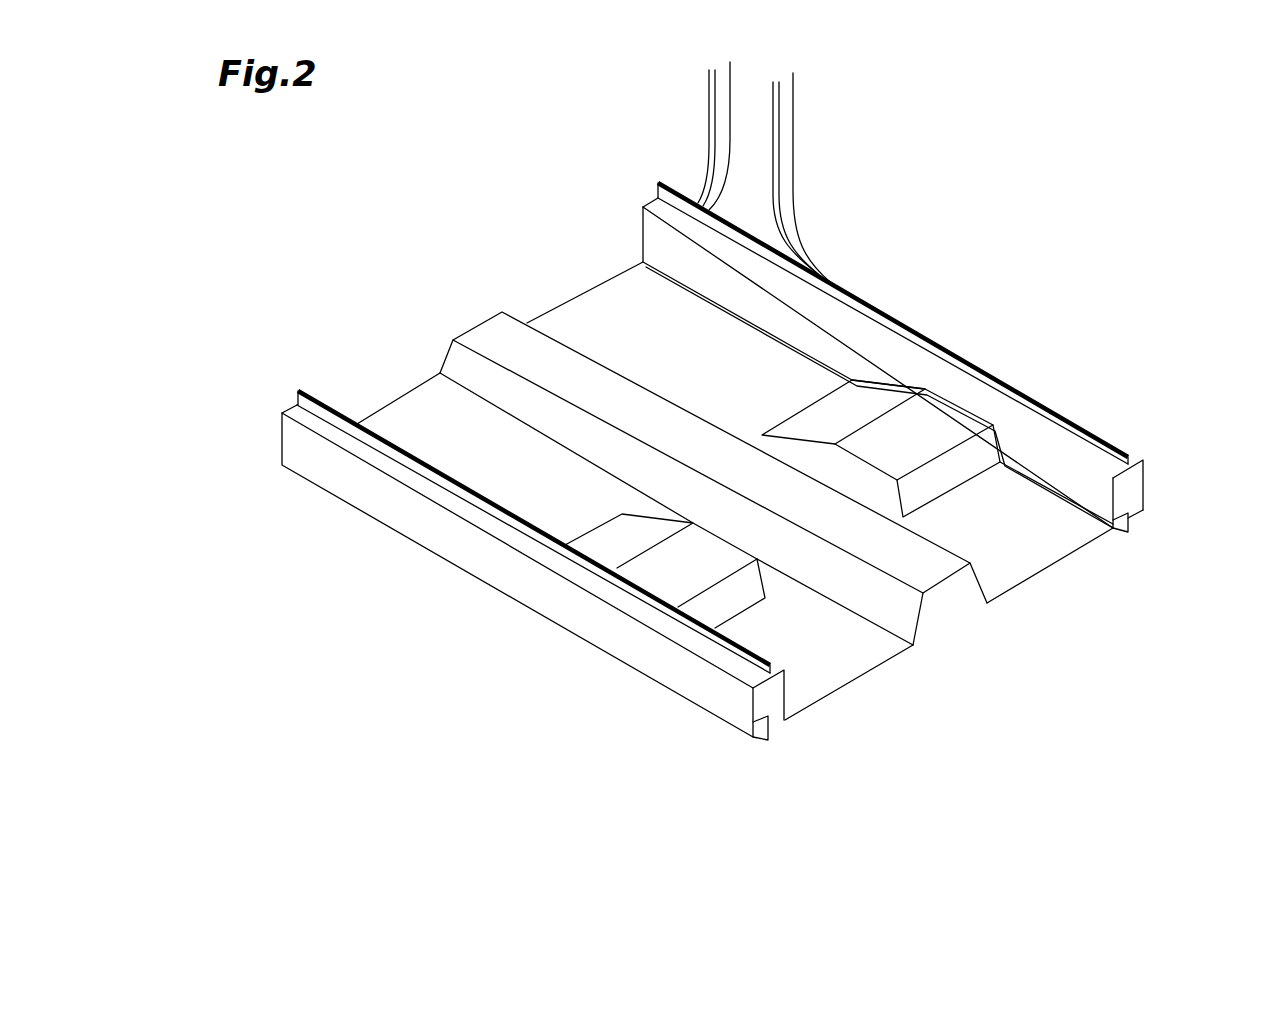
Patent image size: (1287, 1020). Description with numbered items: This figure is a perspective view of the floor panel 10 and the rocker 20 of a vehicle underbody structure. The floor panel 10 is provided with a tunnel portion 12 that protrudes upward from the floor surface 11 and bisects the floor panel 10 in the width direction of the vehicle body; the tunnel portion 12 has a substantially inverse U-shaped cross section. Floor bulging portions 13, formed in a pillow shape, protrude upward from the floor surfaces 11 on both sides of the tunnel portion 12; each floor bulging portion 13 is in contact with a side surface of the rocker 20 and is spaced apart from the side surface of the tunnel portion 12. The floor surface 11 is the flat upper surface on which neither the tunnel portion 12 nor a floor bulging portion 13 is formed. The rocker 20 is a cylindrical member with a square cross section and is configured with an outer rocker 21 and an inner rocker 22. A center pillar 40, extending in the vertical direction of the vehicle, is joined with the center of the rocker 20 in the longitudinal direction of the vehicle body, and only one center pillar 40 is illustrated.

The floor panel 10 is at (751, 491).
The floor surface 11 is at (1032, 547).
The tunnel portion 12 is at (918, 577).
The floor bulging portion 13 is at (913, 425).
The rocker 20 is at (759, 488).
The outer rocker 21 is at (740, 703).
The inner rocker 22 is at (783, 692).
The center pillar 40 is at (749, 167).